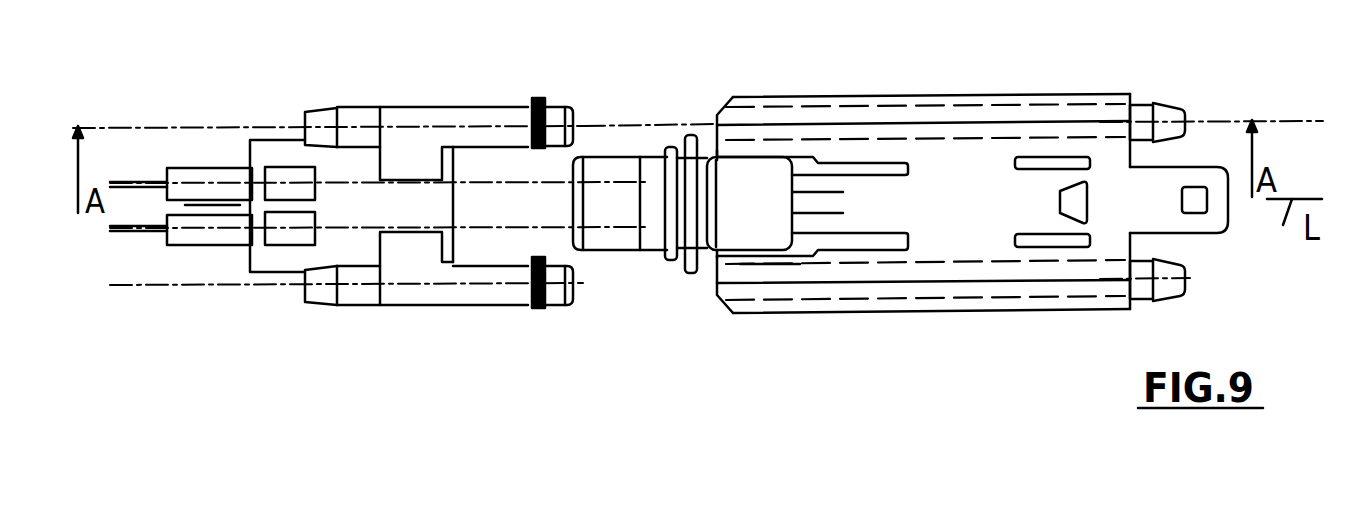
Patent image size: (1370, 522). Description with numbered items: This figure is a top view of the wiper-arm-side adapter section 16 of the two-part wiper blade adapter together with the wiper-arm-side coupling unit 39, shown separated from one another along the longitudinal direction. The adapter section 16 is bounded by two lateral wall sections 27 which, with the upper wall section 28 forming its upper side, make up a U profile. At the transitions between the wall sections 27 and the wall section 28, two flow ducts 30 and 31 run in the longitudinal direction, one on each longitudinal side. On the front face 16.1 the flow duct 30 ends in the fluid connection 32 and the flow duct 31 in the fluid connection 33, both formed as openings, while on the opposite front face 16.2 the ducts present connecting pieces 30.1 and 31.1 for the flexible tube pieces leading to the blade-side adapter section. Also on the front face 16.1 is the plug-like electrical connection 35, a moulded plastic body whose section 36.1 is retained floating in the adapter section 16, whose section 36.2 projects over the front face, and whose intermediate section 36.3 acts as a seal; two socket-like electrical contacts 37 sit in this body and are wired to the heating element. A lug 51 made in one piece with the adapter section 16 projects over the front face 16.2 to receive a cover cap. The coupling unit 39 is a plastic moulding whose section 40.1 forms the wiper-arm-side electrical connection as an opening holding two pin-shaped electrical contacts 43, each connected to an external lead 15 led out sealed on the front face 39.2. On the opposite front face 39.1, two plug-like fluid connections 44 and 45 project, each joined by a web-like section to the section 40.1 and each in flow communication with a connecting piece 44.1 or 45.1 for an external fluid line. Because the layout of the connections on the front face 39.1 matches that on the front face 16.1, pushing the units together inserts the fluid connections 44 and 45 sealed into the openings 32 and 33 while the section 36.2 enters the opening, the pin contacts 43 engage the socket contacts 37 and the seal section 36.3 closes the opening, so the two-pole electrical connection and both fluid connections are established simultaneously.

The external lead 15 is at (173, 178).
The adapter section on the wiper arm side 16 is at (1020, 320).
The front face 16.1 is at (740, 259).
The front face 16.2 is at (1089, 294).
The wall section 27 is at (931, 206).
The upper wall section 28 is at (1007, 221).
The flow duct 30 is at (872, 300).
The connecting piece 30.1 is at (1192, 306).
The flow duct 31 is at (1116, 101).
The connecting piece 31.1 is at (1221, 94).
The fluid connection 32 is at (797, 317).
The fluid connection 33 is at (923, 103).
The electrical connection 35 is at (615, 273).
The section of the moulded body 36.1 is at (760, 202).
The section of the moulded body 36.2 is at (624, 141).
The seal section 36.3 is at (718, 278).
The socket-like electrical contact 37 is at (580, 258).
The coupling unit 39 is at (303, 313).
The front face 39.1 is at (480, 168).
The front face 39.2 is at (250, 253).
The section of the moulding 40.1 is at (220, 273).
The pin-shaped electrical contact 43 is at (395, 242).
The fluid connection 44 is at (510, 307).
The connecting piece 44.1 is at (347, 327).
The fluid connection 45 is at (503, 117).
The connecting piece 45.1 is at (298, 102).
The lug 51 is at (1220, 234).